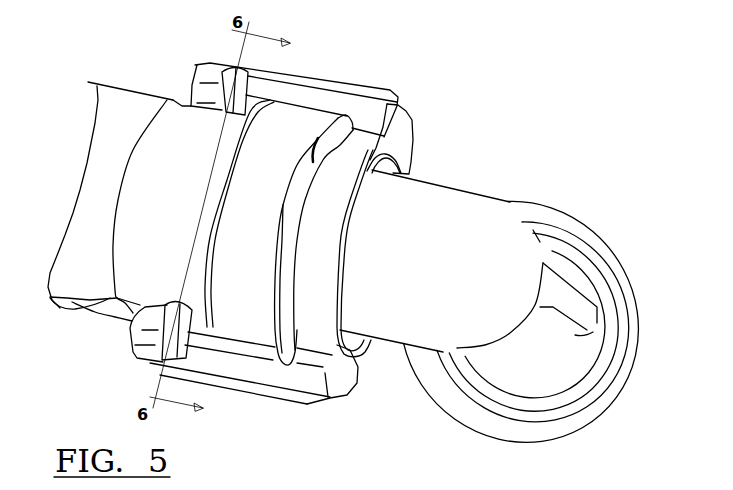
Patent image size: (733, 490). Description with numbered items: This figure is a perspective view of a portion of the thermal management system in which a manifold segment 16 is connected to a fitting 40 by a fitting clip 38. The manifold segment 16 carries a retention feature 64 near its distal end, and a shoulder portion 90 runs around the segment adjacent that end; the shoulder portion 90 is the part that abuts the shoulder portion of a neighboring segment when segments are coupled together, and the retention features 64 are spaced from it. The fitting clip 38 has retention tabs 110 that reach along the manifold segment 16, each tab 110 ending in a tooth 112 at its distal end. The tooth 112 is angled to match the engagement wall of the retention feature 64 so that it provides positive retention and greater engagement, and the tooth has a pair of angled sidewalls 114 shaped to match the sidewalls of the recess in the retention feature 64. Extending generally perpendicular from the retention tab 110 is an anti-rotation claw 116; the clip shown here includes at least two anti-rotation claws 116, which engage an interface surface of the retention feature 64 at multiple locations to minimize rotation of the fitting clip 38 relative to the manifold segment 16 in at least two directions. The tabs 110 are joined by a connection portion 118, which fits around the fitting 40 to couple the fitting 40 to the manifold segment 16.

The manifold segment 16 is at (115, 97).
The fitting clip 38 is at (407, 110).
The fitting 40 is at (500, 230).
The retention feature 64 is at (192, 100).
The shoulder portion 90 is at (248, 322).
The retention tab 110 is at (337, 77).
The tooth 112 is at (87, 299).
The angled sidewall 114 is at (150, 320).
The anti-rotation claw 116 is at (222, 88).
The connection portion 118 is at (398, 145).